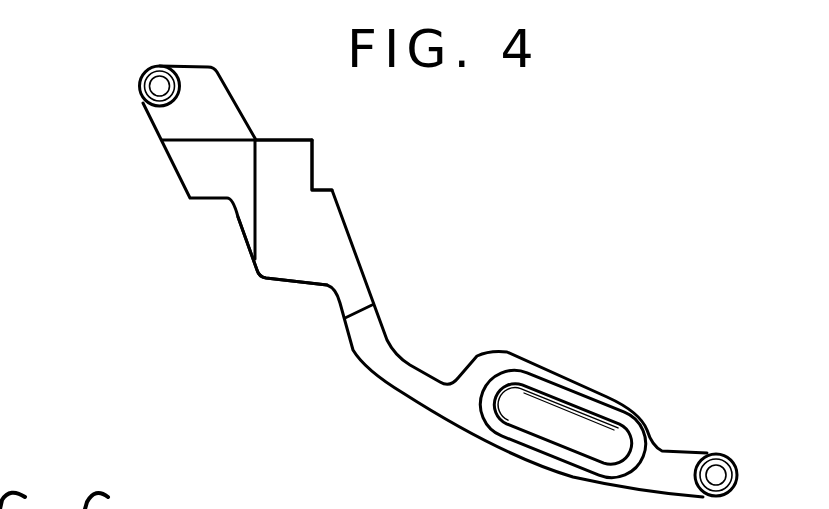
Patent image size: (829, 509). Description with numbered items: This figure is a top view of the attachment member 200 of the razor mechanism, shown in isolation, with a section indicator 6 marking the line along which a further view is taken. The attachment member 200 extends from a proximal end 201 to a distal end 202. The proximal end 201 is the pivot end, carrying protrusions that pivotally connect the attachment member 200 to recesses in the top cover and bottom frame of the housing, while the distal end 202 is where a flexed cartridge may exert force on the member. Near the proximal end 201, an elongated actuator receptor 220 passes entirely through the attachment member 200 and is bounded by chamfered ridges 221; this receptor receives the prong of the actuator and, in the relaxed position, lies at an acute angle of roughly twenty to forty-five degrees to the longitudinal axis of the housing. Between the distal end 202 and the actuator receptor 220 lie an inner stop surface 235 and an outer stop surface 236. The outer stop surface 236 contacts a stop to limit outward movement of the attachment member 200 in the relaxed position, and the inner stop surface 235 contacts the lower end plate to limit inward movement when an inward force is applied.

The section line / view direction 6 is at (113, 88).
The attachment member 200 is at (433, 435).
The proximal end 201 is at (714, 443).
The distal end 202 is at (129, 111).
The actuator receptor 220 is at (520, 450).
The chamfered ridges 221 is at (577, 397).
The inner stop surface 235 is at (282, 278).
The outer stop surface 236 is at (323, 188).